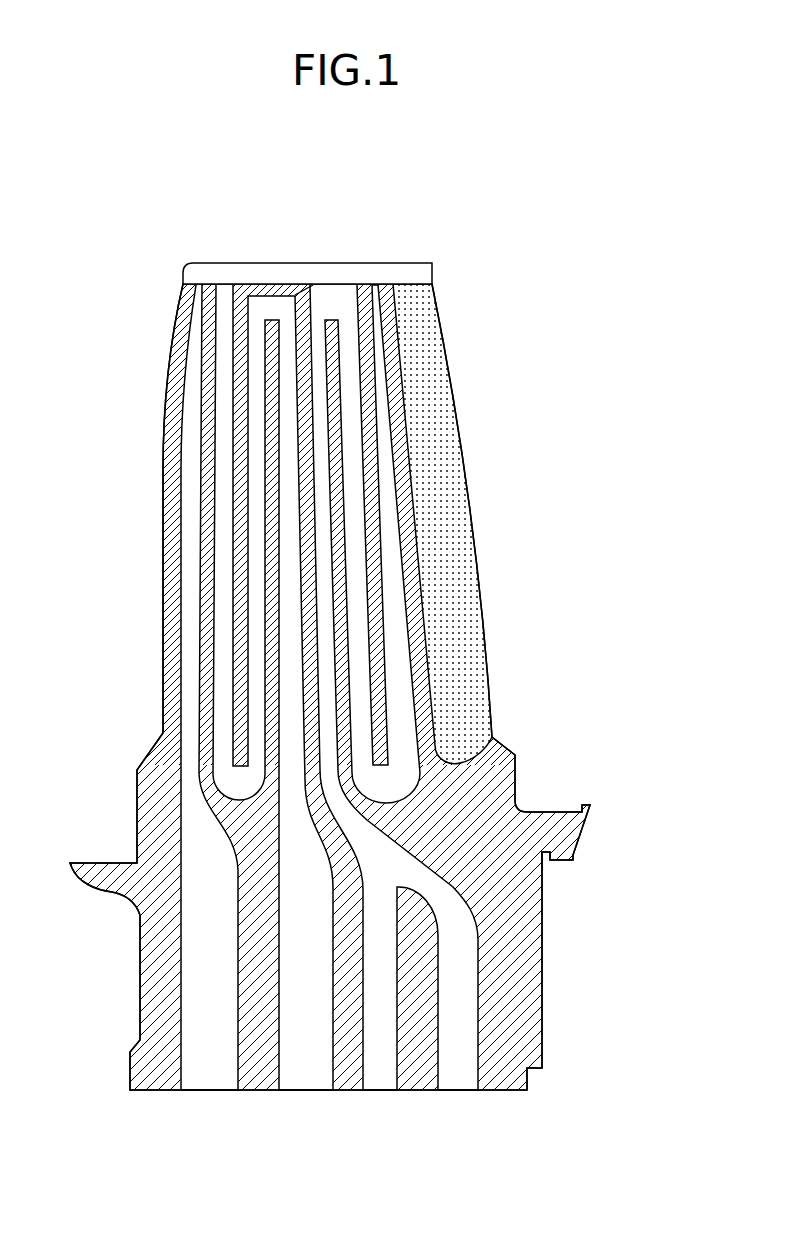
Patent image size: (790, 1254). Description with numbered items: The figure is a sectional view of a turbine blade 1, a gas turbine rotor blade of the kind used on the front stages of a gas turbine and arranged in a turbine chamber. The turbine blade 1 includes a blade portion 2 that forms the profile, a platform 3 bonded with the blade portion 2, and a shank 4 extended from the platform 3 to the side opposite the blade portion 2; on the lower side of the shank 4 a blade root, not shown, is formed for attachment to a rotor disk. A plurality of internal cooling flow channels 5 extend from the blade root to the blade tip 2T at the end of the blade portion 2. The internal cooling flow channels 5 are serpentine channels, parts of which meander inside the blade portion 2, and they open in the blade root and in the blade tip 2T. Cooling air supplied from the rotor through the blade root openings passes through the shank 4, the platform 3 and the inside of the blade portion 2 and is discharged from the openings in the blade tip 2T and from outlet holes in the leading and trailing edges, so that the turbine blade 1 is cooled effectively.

The turbine blade 1 is at (178, 200).
The blade portion 2 is at (483, 472).
The blade tip 2T is at (387, 206).
The platform 3 is at (616, 843).
The shank 4 is at (578, 973).
The internal cooling flow channels 5 is at (470, 1063).